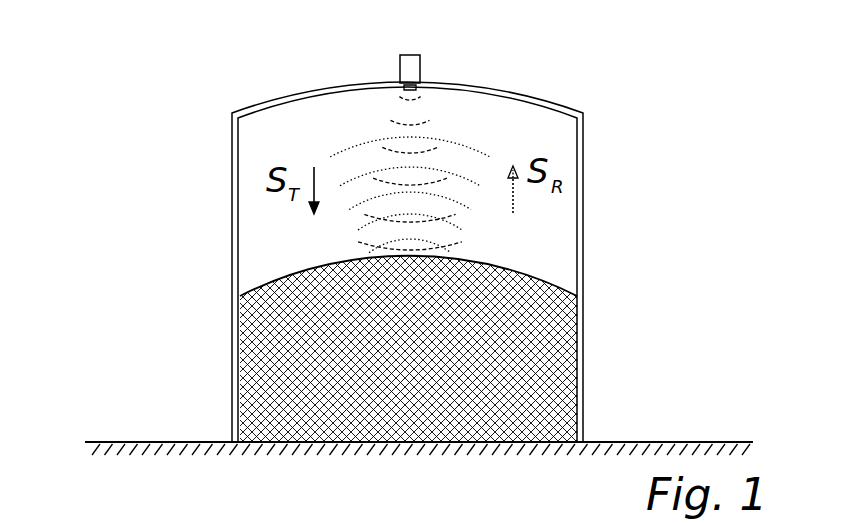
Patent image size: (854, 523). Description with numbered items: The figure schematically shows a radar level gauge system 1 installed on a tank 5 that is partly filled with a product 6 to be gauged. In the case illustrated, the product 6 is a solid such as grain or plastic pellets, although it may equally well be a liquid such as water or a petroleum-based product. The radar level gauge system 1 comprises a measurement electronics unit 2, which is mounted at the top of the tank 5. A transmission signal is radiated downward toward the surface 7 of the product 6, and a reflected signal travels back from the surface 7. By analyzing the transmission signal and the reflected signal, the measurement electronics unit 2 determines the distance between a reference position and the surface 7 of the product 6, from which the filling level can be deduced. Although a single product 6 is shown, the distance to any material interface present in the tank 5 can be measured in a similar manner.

The radar level gauge system 1 is at (427, 53).
The measurement electronics unit 2 is at (400, 68).
The tank 5 is at (583, 148).
The product 6 is at (557, 344).
The surface 7 is at (548, 279).